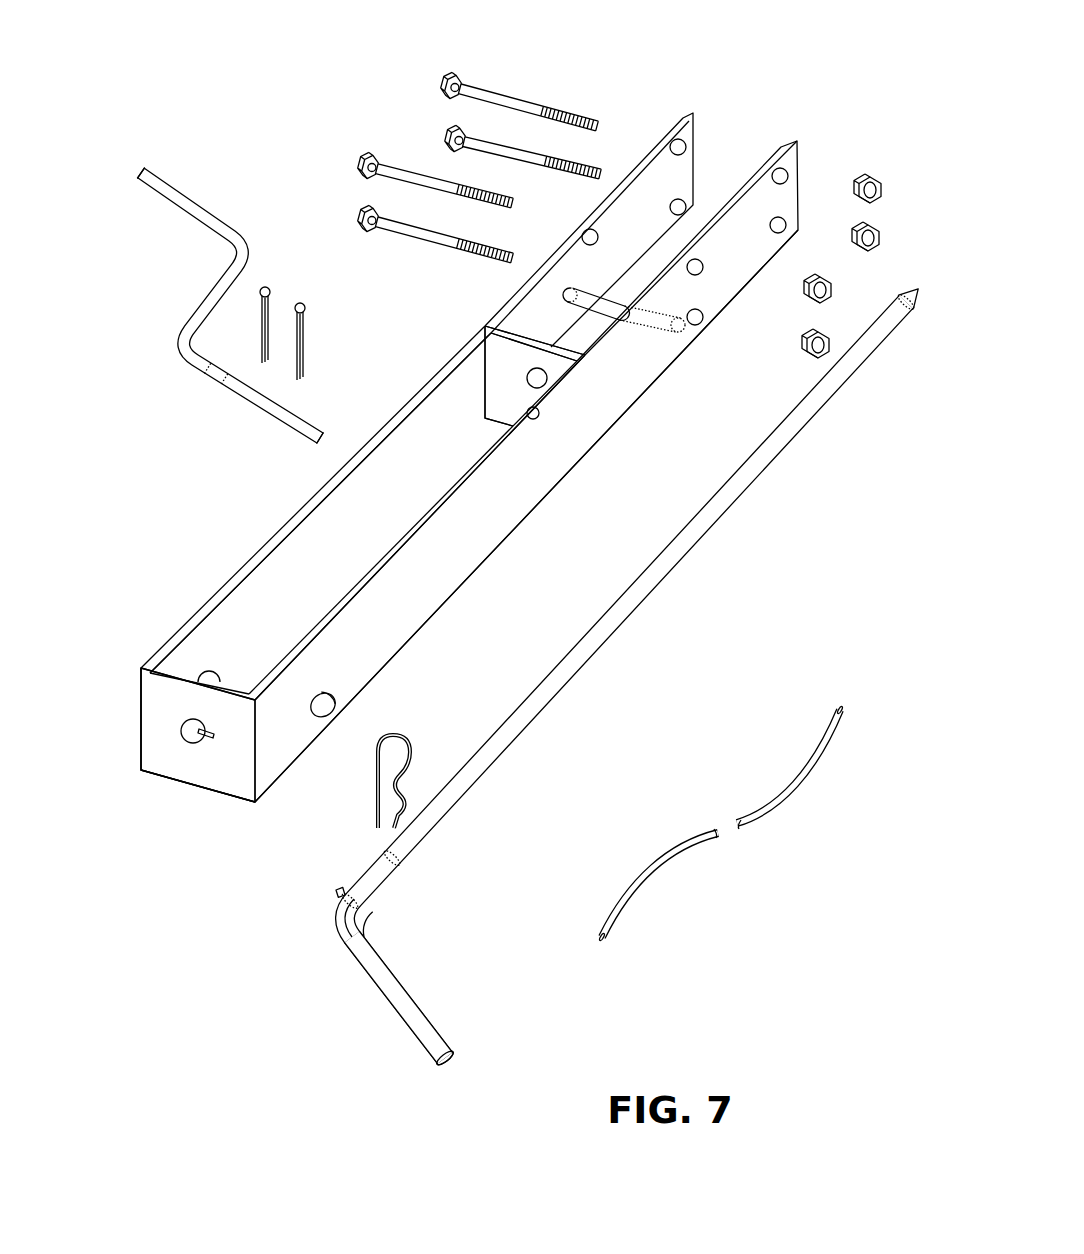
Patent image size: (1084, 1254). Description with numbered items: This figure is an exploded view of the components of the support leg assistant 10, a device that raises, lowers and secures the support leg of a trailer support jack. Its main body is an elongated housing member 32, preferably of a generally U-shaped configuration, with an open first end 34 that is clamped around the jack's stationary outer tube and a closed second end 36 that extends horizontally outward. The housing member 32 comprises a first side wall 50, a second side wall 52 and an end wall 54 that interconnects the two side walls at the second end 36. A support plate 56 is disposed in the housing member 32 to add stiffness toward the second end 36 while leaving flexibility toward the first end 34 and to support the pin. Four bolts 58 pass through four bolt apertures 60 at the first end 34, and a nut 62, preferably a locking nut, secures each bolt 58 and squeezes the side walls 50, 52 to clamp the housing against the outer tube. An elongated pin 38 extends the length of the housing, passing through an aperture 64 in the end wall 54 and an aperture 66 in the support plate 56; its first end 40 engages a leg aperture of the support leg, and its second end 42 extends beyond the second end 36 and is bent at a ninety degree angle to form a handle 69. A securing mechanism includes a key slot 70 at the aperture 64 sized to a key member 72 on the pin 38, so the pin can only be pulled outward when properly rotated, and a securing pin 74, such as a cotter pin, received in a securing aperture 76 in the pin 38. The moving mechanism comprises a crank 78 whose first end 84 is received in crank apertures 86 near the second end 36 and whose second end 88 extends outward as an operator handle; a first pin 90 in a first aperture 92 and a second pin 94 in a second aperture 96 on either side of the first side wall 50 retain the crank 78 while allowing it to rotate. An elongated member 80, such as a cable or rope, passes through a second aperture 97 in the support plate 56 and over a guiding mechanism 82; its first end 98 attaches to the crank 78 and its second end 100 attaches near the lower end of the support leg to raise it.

The support leg assistant 10 is at (236, 80).
The housing member 32 is at (246, 553).
The first end 34 is at (688, 112).
The second end 36 is at (139, 668).
The elongated pin 38 is at (790, 430).
The first end 40 is at (906, 286).
The second end 42 is at (364, 930).
The first side wall 50 is at (243, 597).
The second side wall 52 is at (455, 557).
The end wall 54 is at (172, 718).
The support plate 56 is at (483, 326).
The bolts 58 is at (514, 102).
The bolt apertures 60 is at (784, 168).
The nut 62 is at (866, 174).
The aperture 64 is at (190, 733).
The aperture 66 is at (530, 374).
The handle 69 is at (396, 1010).
The key slot 70 is at (212, 739).
The key member 72 is at (335, 893).
The securing pin 74 is at (405, 740).
The securing aperture 76 is at (398, 858).
The crank 78 is at (192, 336).
The elongated member 80 is at (682, 857).
The guiding mechanism 82 is at (616, 305).
The first end 84 is at (312, 447).
The crank apertures 86 is at (335, 700).
The second end 88 is at (160, 168).
The first pin 90 is at (270, 313).
The first aperture 92 is at (206, 379).
The second pin 94 is at (304, 341).
The second aperture 96 is at (226, 387).
The second aperture 97 is at (540, 416).
The first end 98 is at (608, 950).
The second end 100 is at (846, 725).